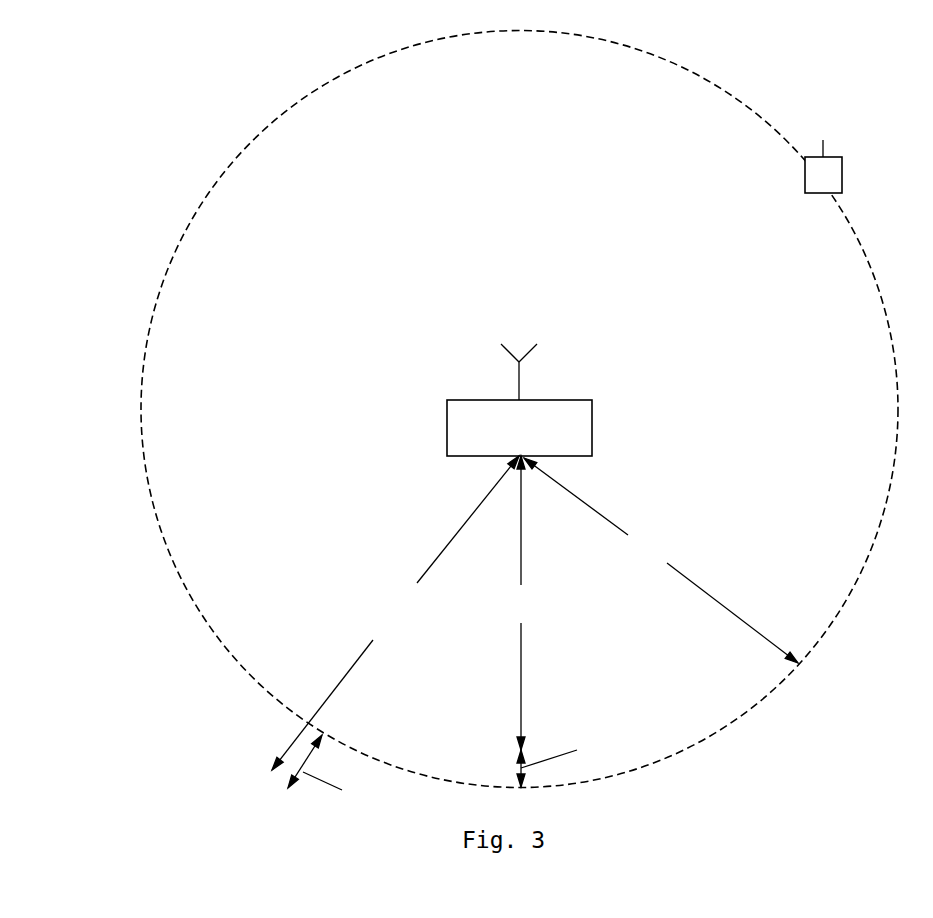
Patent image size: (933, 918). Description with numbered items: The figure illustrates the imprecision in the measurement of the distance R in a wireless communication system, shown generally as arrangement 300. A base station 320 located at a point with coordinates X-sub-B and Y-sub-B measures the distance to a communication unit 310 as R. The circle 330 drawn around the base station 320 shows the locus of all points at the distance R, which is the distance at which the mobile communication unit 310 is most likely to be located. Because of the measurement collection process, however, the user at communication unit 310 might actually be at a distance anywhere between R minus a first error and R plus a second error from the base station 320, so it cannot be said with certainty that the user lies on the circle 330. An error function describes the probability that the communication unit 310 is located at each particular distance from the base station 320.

The positioning scenario 300 is at (190, 64).
The communication unit 310 is at (842, 175).
The base station 320 is at (447, 411).
The circle 330 is at (175, 570).